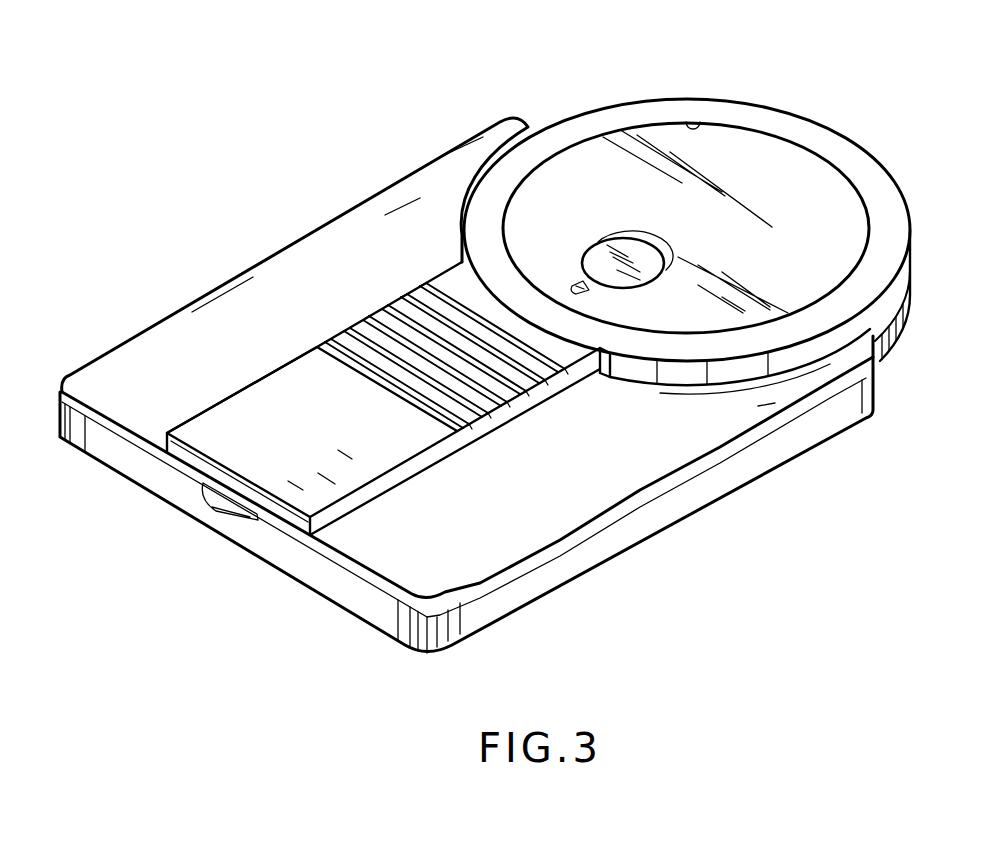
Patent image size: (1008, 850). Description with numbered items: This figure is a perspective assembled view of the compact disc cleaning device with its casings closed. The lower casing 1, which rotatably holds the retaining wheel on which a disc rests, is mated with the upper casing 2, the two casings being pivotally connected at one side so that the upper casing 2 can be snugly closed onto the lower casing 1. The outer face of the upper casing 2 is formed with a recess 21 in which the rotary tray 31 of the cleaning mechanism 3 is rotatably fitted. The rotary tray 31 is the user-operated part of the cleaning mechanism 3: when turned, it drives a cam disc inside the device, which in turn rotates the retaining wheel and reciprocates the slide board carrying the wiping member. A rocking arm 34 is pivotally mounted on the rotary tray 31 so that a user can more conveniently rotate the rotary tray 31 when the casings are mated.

The lower casing 1 is at (318, 596).
The upper casing 2 is at (354, 255).
The cleaning mechanism 3 is at (318, 397).
The recess 21 is at (692, 117).
The rotary tray 31 is at (737, 165).
The rocking arm 34 is at (605, 252).